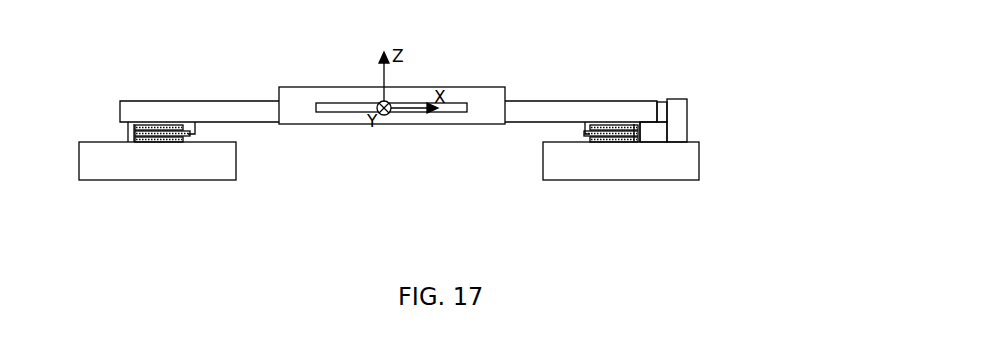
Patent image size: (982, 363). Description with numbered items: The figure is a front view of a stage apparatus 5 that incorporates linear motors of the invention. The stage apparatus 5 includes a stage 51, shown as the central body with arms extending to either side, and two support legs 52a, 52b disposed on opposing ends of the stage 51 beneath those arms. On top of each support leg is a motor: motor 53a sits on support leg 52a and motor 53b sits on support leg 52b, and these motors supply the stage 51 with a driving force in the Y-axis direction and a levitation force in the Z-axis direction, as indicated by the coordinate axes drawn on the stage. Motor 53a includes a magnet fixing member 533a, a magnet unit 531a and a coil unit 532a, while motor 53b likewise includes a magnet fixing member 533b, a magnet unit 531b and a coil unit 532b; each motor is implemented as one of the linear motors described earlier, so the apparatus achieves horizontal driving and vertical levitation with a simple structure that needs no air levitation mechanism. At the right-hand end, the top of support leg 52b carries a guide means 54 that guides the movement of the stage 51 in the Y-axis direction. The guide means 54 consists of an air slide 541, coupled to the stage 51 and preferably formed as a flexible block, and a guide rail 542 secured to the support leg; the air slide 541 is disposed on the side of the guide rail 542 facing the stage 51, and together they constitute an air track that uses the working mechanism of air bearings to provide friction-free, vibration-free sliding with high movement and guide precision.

The stage apparatus 5 is at (341, 87).
The stage 51 is at (454, 104).
The support leg 52a is at (214, 170).
The support leg 52b is at (563, 167).
The motor 53a is at (174, 136).
The motor 53b is at (620, 136).
The magnet unit 531a is at (170, 125).
The magnet unit 531b is at (622, 125).
The coil unit 532a is at (189, 124).
The coil unit 532b is at (588, 122).
The magnet fixing member 533a is at (130, 122).
The magnet fixing member 533b is at (643, 122).
The guide means 54 is at (726, 169).
The air slide 541 is at (668, 105).
The guide rail 542 is at (677, 133).